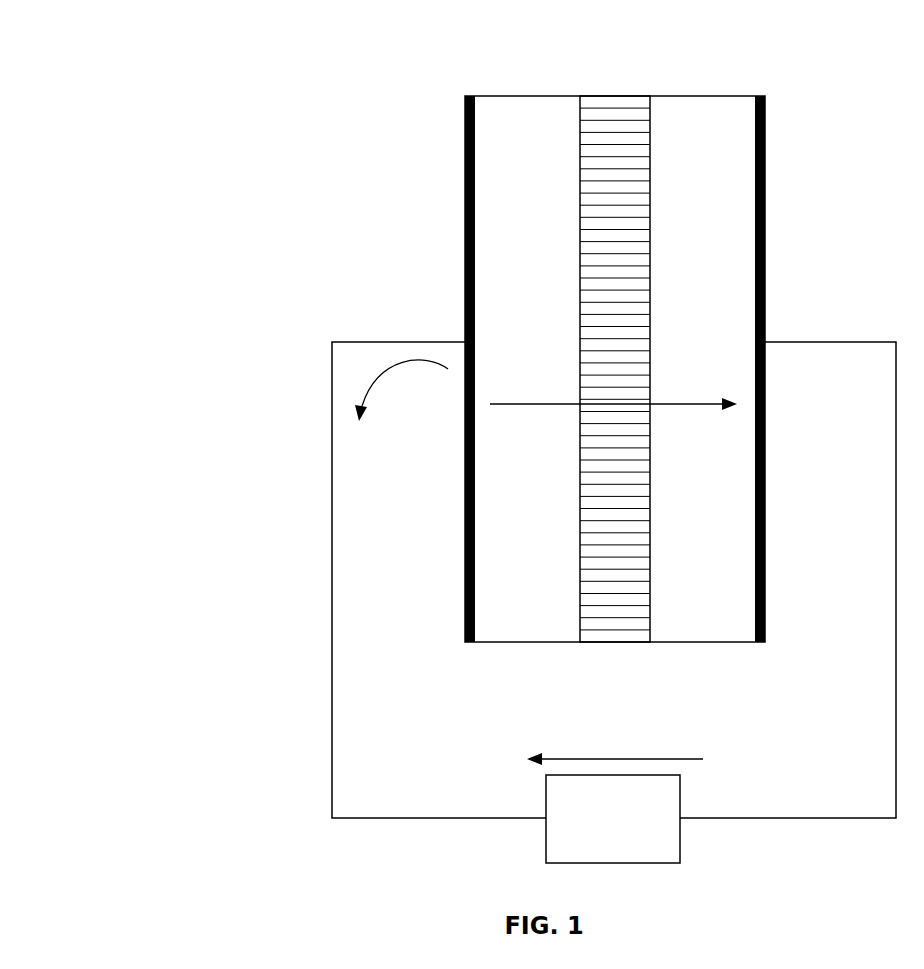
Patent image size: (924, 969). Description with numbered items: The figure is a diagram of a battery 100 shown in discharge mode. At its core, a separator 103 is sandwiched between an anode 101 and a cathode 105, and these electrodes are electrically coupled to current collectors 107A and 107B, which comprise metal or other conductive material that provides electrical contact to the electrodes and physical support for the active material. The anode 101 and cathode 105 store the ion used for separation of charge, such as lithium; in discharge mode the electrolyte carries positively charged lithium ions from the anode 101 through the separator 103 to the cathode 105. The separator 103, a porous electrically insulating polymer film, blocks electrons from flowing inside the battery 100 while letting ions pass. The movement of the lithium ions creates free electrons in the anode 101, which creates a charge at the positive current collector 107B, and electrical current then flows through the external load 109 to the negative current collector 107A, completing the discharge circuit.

The battery 100 is at (150, 186).
The anode 101 is at (527, 369).
The separator 103 is at (617, 96).
The cathode 105 is at (702, 369).
The negative current collector 107A is at (465, 113).
The positive current collector 107B is at (765, 118).
The load 109 is at (613, 819).